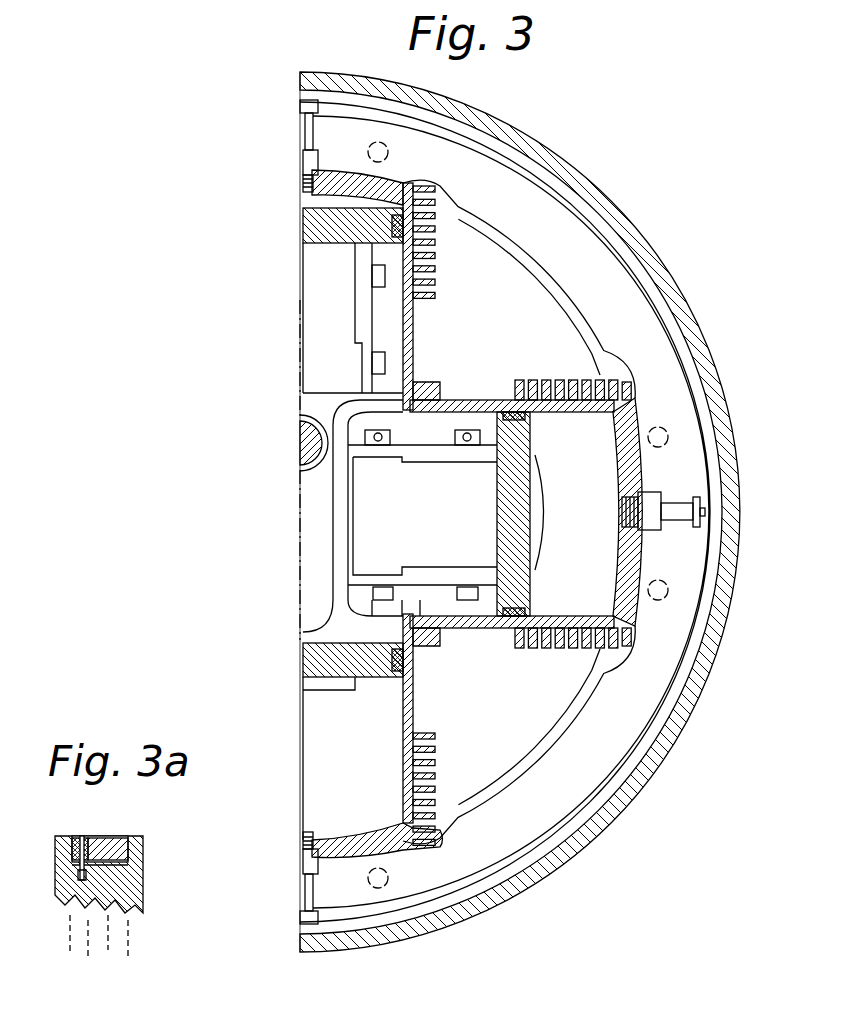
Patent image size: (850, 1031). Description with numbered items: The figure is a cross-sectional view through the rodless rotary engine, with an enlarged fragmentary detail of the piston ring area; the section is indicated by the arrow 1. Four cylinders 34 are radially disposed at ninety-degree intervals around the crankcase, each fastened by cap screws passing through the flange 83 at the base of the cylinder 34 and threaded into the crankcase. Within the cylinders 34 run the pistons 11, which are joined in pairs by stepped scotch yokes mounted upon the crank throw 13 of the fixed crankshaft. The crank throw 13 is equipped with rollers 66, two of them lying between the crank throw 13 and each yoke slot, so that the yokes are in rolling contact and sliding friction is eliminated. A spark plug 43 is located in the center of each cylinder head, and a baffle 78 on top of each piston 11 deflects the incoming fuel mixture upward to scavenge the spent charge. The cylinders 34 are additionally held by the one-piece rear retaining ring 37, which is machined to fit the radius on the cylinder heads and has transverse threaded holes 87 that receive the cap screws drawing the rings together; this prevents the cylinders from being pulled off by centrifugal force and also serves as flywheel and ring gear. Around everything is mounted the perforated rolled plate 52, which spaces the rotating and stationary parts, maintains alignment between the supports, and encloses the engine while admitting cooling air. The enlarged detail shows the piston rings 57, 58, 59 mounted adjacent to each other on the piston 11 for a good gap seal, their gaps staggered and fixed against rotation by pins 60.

In FIG. 3, the engine 1 is at (740, 510).
In FIG. 3, the piston 11 is at (303, 226).
In FIG. 3A, the piston 11 is at (143, 899).
In FIG. 3, the crank throw 13 is at (306, 440).
In FIG. 3, the cylinder 34 is at (437, 268).
In FIG. 3, the rear retaining ring 37 is at (598, 775).
In FIG. 3, the spark plug 43 is at (305, 128).
In FIG. 3, the perforated rolled plate 52 is at (690, 276).
In FIG. 3A, the piston ring 57 is at (82, 836).
In FIG. 3A, the piston ring 58 is at (108, 838).
In FIG. 3A, the piston ring 59 is at (122, 838).
In FIG. 3A, the pin 60 is at (78, 874).
In FIG. 3, the roller 66 is at (310, 460).
In FIG. 3, the baffle 78 is at (320, 190).
In FIG. 3, the flange 83 is at (435, 391).
In FIG. 3, the threaded hole 87 is at (389, 151).